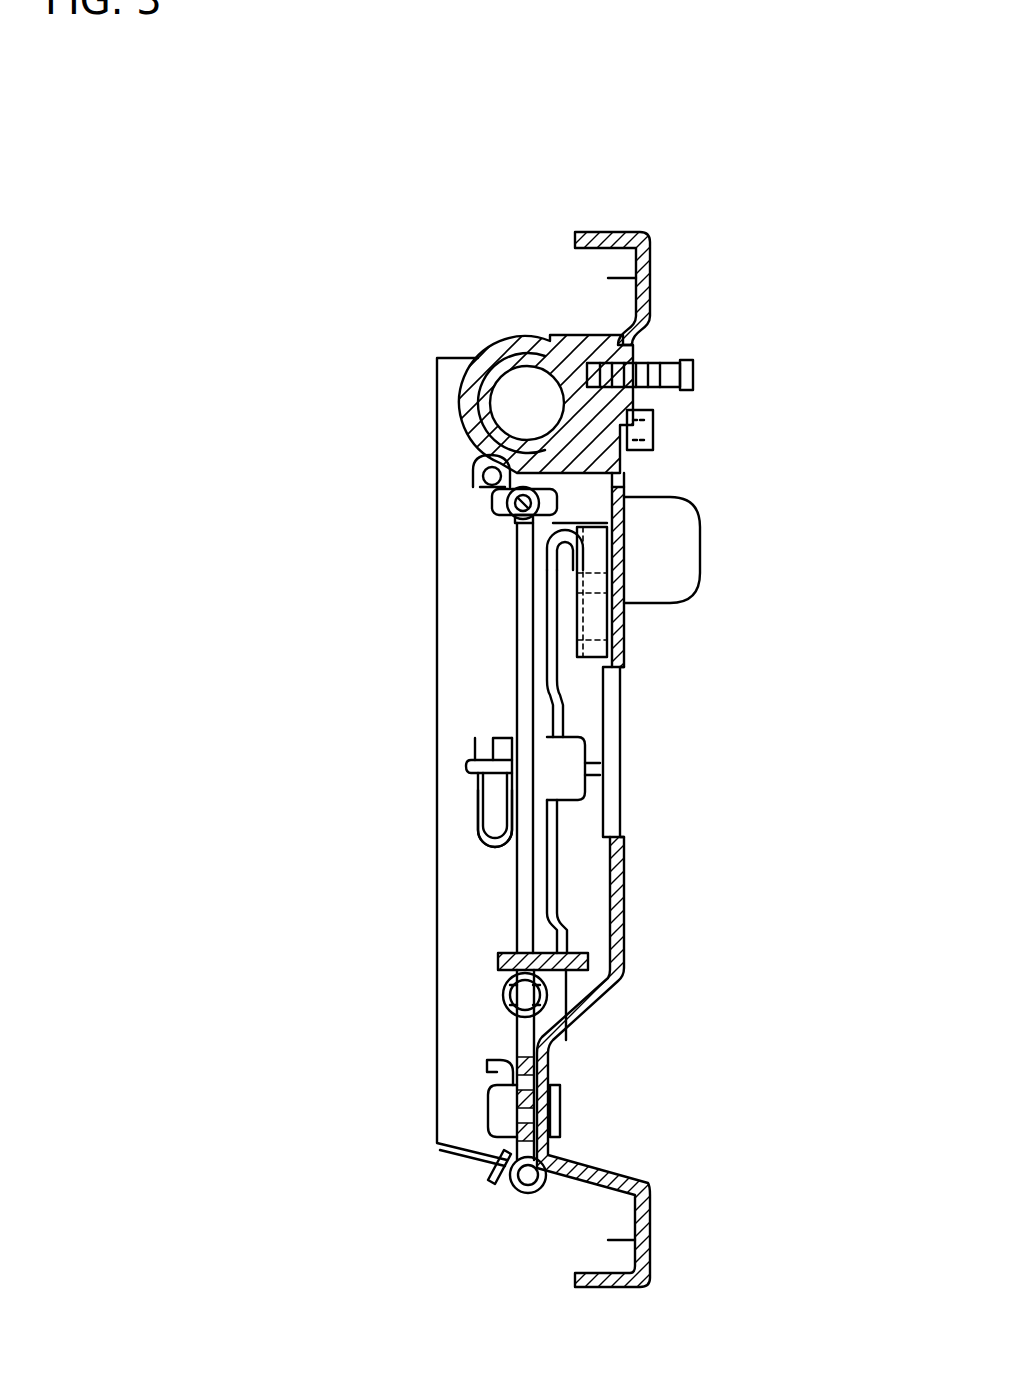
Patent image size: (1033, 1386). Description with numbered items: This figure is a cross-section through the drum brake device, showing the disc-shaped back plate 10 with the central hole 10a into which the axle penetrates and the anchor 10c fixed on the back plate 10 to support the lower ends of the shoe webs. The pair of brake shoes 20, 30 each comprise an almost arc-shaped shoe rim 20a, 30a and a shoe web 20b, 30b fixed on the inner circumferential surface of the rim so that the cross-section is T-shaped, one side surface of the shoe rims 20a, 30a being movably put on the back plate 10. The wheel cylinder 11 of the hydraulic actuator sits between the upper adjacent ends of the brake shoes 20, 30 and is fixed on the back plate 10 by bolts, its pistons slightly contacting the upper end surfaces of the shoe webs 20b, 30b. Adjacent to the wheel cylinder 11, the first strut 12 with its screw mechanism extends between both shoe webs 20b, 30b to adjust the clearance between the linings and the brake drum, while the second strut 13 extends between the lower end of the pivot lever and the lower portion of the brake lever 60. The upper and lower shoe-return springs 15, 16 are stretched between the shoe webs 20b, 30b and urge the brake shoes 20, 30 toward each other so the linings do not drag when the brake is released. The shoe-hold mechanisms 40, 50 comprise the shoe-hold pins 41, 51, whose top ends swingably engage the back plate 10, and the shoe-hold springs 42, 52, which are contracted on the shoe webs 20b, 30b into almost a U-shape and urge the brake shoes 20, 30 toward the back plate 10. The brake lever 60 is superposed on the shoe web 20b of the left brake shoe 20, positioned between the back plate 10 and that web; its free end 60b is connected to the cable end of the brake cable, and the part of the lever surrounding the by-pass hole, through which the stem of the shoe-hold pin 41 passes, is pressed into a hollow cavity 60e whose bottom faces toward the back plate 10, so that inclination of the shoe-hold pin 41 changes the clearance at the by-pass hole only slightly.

The back plate 10 is at (627, 945).
The central hole 10a is at (622, 826).
The anchor 10c is at (530, 1107).
The wheel cylinder 11 is at (501, 343).
The first strut 12 is at (505, 507).
The second strut 13 is at (498, 961).
The upper shoe-return spring 15 is at (478, 472).
The lower shoe-return spring 16 is at (503, 992).
The brake shoe 20 is at (375, 762).
The brake shoe 30 is at (437, 907).
The shoe rim 20a is at (394, 818).
The shoe rim 30a is at (495, 818).
The shoe web 20b is at (405, 841).
The shoe web 30b is at (515, 856).
The shoe-hold mechanism 40 is at (351, 760).
The shoe-hold mechanism 50 is at (412, 760).
The shoe-hold pin 41 is at (412, 723).
The shoe-hold pin 51 is at (495, 758).
The shoe-hold spring 42 is at (412, 792).
The shoe-hold spring 52 is at (467, 770).
The brake lever 60 is at (542, 589).
The free end 60b is at (543, 545).
The hollow cavity 60e is at (572, 753).